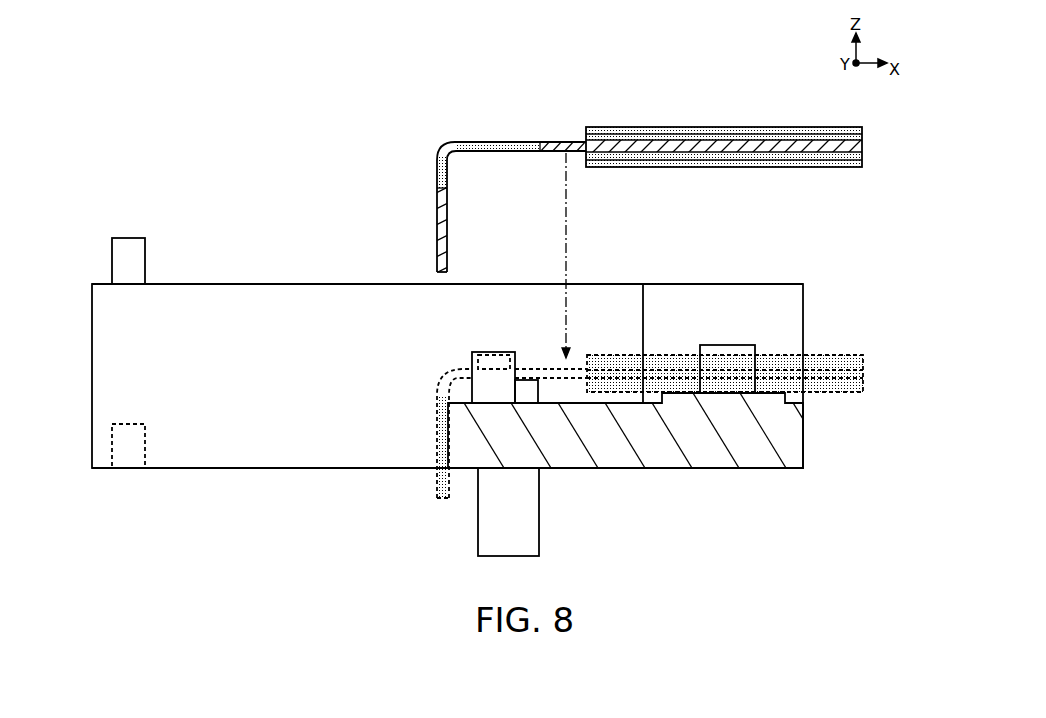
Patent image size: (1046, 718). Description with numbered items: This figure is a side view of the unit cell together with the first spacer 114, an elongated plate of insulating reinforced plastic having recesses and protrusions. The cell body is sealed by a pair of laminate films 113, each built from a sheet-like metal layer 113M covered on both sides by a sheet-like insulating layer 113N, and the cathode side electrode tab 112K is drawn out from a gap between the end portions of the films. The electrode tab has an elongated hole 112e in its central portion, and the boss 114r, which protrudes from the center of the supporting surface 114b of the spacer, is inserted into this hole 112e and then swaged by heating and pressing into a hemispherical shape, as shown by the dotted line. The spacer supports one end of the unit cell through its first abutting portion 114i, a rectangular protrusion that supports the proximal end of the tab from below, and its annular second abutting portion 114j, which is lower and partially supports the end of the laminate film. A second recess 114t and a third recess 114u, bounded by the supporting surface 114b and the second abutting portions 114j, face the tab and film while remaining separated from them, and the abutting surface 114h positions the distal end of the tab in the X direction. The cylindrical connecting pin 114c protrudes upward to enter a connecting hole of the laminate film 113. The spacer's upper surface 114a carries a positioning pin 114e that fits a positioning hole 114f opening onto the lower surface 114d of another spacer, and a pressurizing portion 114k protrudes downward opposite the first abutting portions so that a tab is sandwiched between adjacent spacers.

The hole 112e is at (452, 150).
The cathode side electrode tab 112K is at (560, 143).
The laminate film 113 is at (737, 144).
The metal layer 113M is at (733, 130).
The insulating layer 113N is at (737, 130).
The first spacer 114 is at (803, 468).
The upper surface 114a is at (246, 284).
The supporting surface 114b is at (447, 378).
The connecting pin 114c is at (727, 345).
The lower surface 114d is at (243, 470).
The positioning pin 114e is at (130, 238).
The positioning hole 114f is at (130, 470).
The abutting surface 114h is at (447, 435).
The first abutting portion 114i is at (523, 380).
The second abutting portion 114j is at (650, 400).
The pressurizing portion 114k is at (510, 557).
The boss 114r is at (482, 350).
The second recess 114t is at (595, 400).
The third recess 114u is at (735, 400).